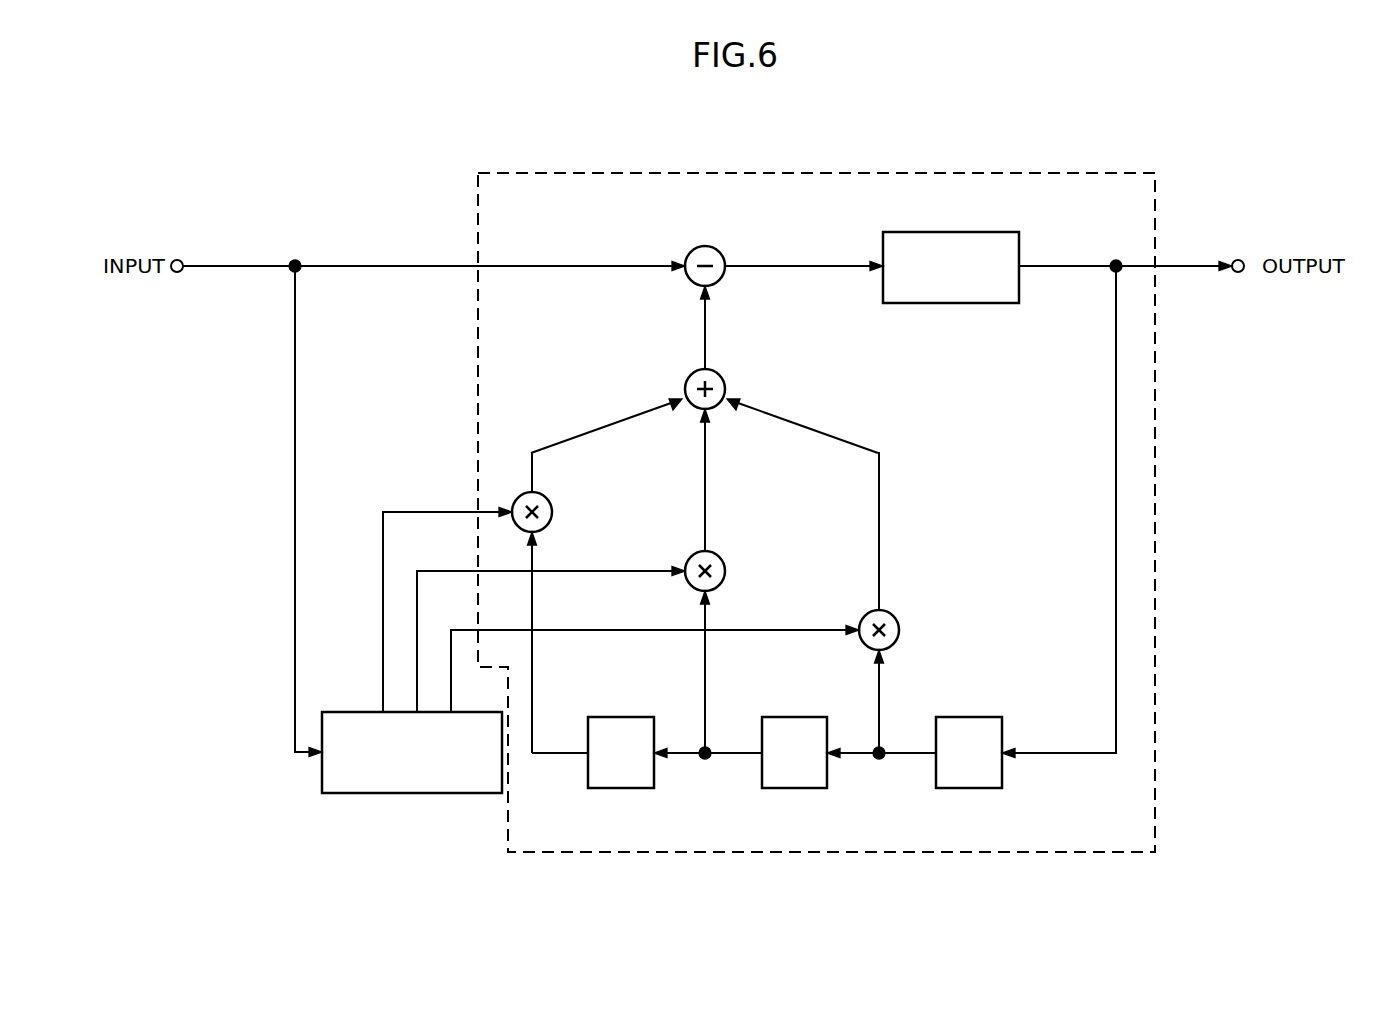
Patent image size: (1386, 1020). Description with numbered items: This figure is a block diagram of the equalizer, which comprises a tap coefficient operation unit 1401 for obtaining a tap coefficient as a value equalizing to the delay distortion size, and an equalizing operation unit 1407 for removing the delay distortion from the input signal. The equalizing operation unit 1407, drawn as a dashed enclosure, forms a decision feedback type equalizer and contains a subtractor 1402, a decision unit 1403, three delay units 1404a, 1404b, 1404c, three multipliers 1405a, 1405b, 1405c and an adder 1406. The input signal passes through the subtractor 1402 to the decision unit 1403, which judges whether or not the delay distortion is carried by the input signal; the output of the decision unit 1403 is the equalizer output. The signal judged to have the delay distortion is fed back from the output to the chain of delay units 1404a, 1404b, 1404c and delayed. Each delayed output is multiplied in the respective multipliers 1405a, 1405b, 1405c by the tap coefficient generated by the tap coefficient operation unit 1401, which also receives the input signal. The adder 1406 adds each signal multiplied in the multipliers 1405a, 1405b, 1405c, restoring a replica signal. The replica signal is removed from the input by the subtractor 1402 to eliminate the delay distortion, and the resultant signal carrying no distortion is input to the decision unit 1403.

The tap coefficient operation unit 1401 is at (415, 793).
The subtractor 1402 is at (695, 247).
The decision unit 1403 is at (925, 232).
The delay unit 1404a is at (936, 777).
The delay unit 1404b is at (762, 777).
The delay unit 1404c is at (588, 777).
The multiplier 1405a is at (893, 615).
The multiplier 1405b is at (719, 556).
The multiplier 1405c is at (546, 497).
The adder 1406 is at (717, 372).
The equalizing operation unit 1407 is at (1035, 852).